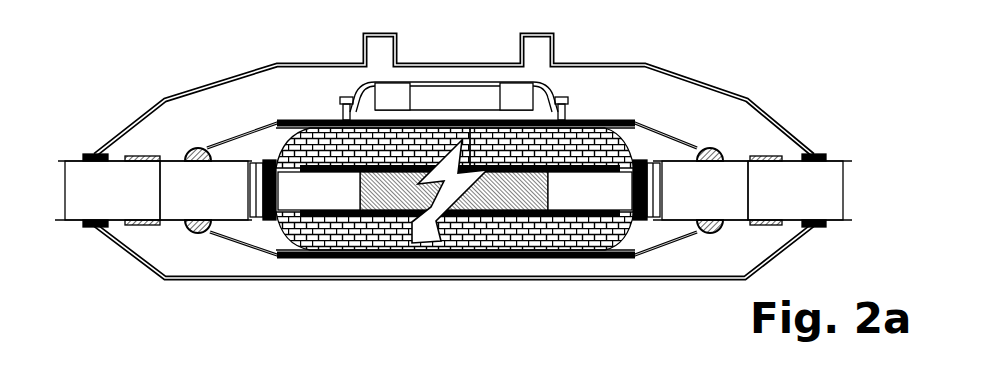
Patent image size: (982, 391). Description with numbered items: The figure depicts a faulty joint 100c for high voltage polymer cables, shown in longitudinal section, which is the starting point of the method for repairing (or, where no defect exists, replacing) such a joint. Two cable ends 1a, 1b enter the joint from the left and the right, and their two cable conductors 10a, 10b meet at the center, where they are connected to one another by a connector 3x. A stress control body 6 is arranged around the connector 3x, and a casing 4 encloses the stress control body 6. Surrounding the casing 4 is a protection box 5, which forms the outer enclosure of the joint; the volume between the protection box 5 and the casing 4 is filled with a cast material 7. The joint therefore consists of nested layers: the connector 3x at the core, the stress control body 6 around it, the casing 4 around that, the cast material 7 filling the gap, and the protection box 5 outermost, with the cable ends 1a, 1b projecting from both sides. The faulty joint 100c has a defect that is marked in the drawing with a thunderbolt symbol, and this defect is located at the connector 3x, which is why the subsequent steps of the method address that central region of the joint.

The faulty joint 100c is at (451, 208).
The cable end 1a is at (62, 200).
The cable end 1b is at (675, 198).
The protection box 5 is at (187, 270).
The cast material 7 is at (235, 255).
The casing 4 is at (290, 258).
The stress control body 6 is at (352, 257).
The cable conductor 10a is at (420, 257).
The cable conductor 10b is at (577, 257).
The connector 3x is at (497, 257).